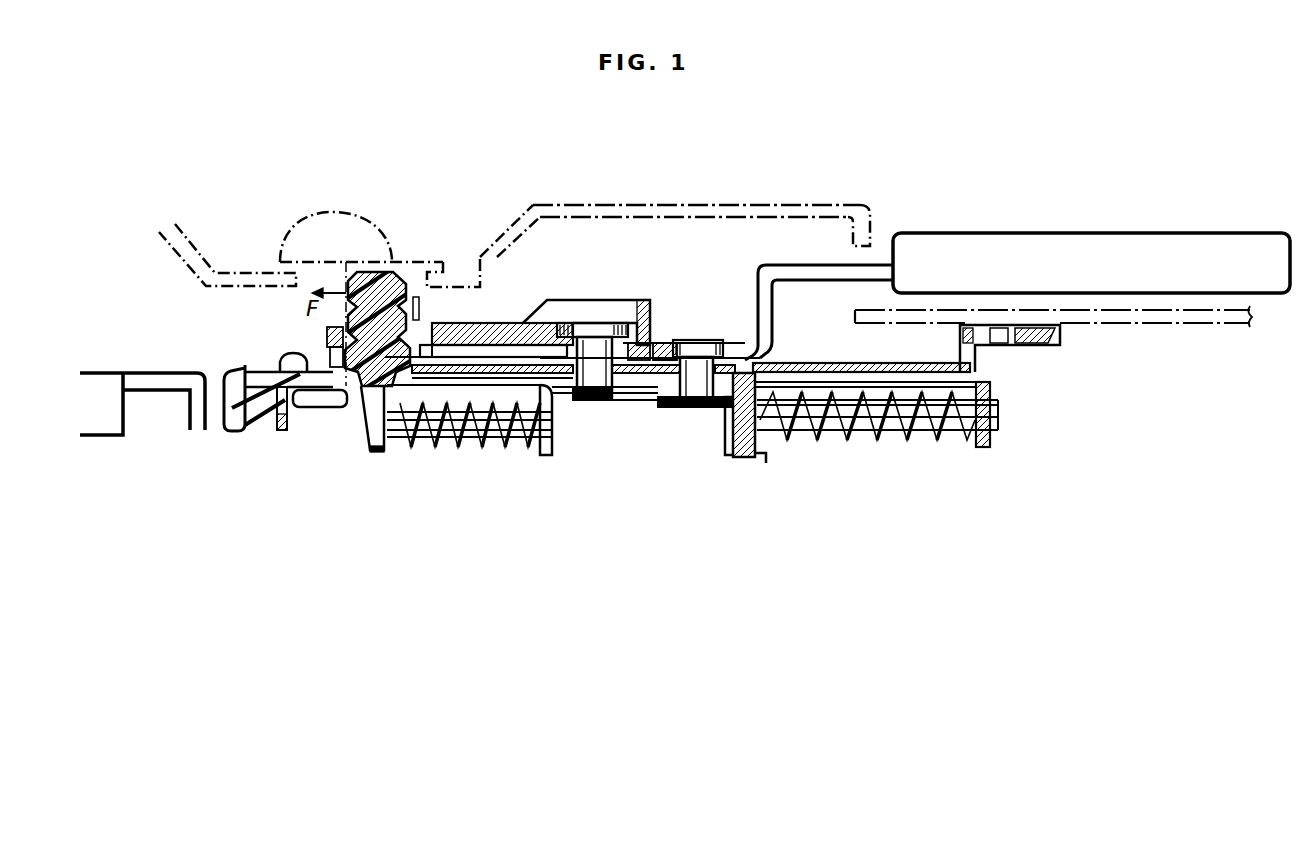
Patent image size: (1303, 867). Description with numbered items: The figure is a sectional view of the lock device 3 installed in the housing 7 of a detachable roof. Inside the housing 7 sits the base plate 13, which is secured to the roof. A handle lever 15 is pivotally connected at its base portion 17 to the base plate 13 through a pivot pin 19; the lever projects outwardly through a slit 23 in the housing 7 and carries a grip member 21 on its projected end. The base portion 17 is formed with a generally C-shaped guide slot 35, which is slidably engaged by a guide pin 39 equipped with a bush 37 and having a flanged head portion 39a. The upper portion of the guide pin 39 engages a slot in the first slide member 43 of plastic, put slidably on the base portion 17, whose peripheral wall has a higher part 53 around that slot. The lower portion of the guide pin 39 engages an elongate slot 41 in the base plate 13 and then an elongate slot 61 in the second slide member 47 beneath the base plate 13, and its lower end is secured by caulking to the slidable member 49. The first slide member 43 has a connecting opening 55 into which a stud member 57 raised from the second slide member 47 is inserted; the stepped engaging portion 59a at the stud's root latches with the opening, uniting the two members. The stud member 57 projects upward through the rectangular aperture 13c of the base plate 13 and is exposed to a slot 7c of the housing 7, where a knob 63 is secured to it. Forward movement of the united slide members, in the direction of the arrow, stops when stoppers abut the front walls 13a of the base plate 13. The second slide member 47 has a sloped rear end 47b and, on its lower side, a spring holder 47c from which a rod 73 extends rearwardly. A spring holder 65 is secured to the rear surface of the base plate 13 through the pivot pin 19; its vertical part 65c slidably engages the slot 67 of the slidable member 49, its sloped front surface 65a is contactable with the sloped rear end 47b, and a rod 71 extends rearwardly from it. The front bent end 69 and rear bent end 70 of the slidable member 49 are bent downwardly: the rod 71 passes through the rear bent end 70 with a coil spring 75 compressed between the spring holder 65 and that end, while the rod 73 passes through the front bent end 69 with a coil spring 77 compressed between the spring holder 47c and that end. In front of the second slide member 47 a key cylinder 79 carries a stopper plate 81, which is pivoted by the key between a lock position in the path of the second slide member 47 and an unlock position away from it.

The lock device 3 is at (812, 182).
The housing 7 is at (588, 204).
The slot 7c is at (308, 278).
The base plate 13 is at (893, 365).
The front walls 13a is at (280, 410).
The rectangular aperture 13c is at (268, 384).
The handle lever 15 is at (803, 263).
The base portion 17 is at (650, 348).
The pivot pin 19 is at (710, 408).
The grip member 21 is at (1133, 234).
The slit 23 is at (868, 257).
The C-shaped guide slot 35 is at (520, 342).
The bush 37 is at (567, 397).
The guide pin 39 is at (598, 337).
The flanged head portion 39a is at (571, 322).
The elongate slot 41 is at (470, 300).
The first slide member 43 is at (543, 297).
The second slide member 47 is at (234, 367).
The sloped rear end 47b is at (641, 390).
The spring holder 47c is at (358, 402).
The slidable member 49 is at (619, 402).
The higher part 53 is at (641, 305).
The connecting opening 55 is at (347, 400).
The stud member 57 is at (390, 272).
The stepped engaging portion 59a is at (279, 343).
The elongate slot 61 is at (456, 363).
The knob 63 is at (338, 212).
The spring holder 65 is at (773, 370).
The sloped front surface 65a is at (656, 356).
The vertical part 65c is at (758, 457).
The slot 67 is at (661, 408).
The front bent end 69 is at (553, 452).
The rear bent end 70 is at (992, 449).
The rod 71 is at (947, 435).
The rod 73 is at (445, 443).
The coil spring 75 is at (883, 442).
The coil spring 77 is at (510, 440).
The key cylinder 79 is at (110, 373).
The stopper plate 81 is at (165, 373).